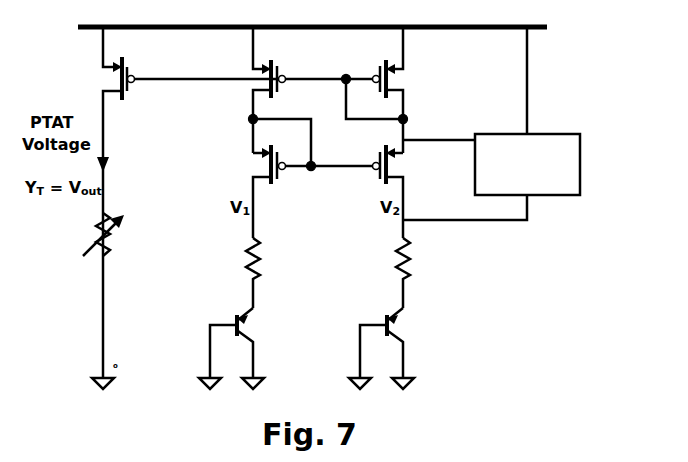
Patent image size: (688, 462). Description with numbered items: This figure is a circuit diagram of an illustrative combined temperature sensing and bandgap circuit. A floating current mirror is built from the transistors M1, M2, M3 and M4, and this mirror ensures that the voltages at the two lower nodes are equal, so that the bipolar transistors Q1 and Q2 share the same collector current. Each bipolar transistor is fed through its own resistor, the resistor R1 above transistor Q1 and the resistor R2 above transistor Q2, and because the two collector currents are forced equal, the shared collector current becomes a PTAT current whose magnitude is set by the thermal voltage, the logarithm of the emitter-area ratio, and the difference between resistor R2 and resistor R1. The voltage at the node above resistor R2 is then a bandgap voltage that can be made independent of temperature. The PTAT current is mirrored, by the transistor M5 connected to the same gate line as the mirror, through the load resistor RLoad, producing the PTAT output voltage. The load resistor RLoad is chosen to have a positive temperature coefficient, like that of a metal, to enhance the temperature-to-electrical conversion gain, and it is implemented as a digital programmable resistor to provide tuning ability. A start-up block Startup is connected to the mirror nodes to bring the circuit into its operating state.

The transistor M5 is at (101, 91).
The transistor M1 is at (253, 90).
The transistor M2 is at (406, 90).
The transistor M3 is at (253, 191).
The transistor M4 is at (406, 191).
The load resistor RLoad is at (86, 234).
The resistor R1 is at (269, 273).
The resistor R2 is at (419, 273).
The bipolar transistor Q1 is at (238, 340).
The bipolar transistor Q2 is at (401, 340).
The start-up circuit Startup is at (491, 123).